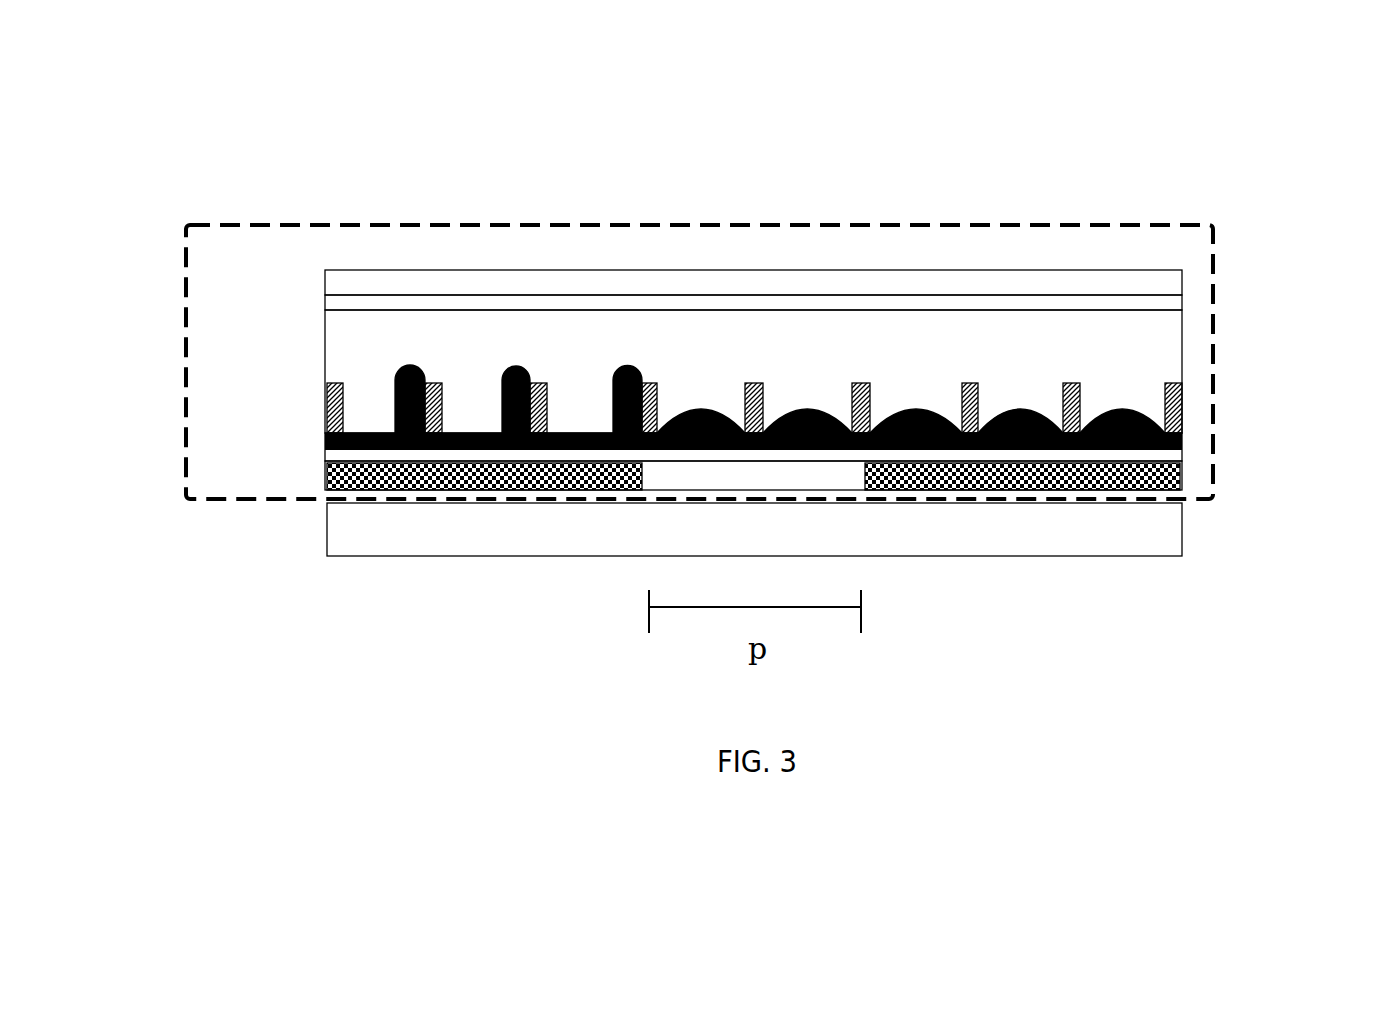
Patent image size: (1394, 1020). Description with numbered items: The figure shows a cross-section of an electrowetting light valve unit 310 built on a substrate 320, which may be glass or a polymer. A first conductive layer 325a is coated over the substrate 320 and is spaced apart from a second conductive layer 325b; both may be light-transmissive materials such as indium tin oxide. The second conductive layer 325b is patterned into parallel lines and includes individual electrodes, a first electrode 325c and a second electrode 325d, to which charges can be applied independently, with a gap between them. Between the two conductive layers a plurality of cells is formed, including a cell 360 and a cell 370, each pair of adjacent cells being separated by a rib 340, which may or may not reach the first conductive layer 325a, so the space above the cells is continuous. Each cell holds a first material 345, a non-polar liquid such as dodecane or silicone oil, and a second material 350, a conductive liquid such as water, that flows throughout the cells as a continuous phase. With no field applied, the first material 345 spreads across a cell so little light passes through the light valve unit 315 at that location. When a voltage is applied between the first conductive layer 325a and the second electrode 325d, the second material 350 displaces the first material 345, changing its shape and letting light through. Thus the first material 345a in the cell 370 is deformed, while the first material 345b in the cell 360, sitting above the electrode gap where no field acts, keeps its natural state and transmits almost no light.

The light valve unit 310 is at (238, 209).
The light valve unit 315 is at (308, 528).
The substrate 320 is at (1196, 269).
The first conductive layer 325a is at (1196, 297).
The second conductive layer 325b is at (1196, 457).
The first electrode 325c is at (1008, 509).
The second electrode 325d is at (518, 507).
The rib 340 is at (548, 377).
The first material 345 is at (1137, 386).
The first material 345a is at (415, 350).
The first material 345b is at (691, 391).
The second material 350 is at (1164, 344).
The cell 360 is at (727, 376).
The cell 370 is at (362, 390).